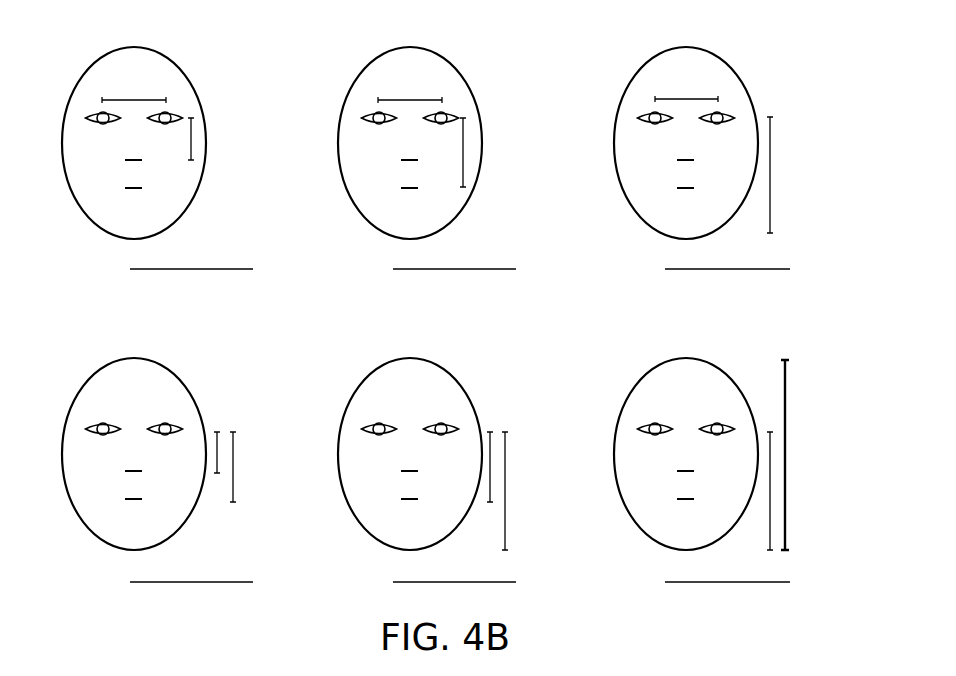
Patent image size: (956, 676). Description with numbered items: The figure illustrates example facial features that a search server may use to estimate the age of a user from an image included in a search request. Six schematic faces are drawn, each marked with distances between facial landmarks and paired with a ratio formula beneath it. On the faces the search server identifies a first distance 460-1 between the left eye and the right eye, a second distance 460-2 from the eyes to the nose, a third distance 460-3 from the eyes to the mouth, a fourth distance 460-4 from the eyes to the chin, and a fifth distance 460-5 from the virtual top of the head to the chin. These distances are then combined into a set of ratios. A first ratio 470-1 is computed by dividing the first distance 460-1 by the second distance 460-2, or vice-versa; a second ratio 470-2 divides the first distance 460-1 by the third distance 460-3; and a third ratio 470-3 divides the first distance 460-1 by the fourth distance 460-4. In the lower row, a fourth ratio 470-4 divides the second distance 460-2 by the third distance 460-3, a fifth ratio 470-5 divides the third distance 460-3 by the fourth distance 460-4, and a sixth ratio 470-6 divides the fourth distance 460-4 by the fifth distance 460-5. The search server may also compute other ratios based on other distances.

The first distance 460-1 is at (683, 98).
The second distance 460-2 is at (213, 453).
The third distance 460-3 is at (488, 450).
The fourth distance 460-4 is at (767, 453).
The fifth distance 460-5 is at (782, 402).
The first ratio 470-1 is at (151, 270).
The second ratio 470-2 is at (414, 270).
The third ratio 470-3 is at (688, 270).
The fourth ratio 470-4 is at (151, 582).
The fifth ratio 470-5 is at (414, 582).
The sixth ratio 470-6 is at (688, 582).